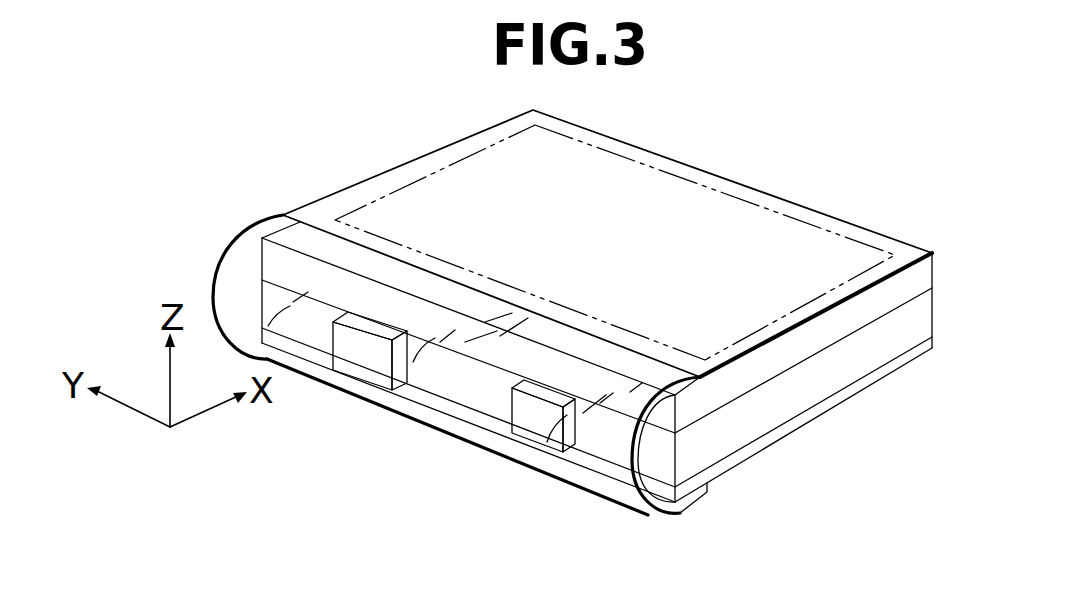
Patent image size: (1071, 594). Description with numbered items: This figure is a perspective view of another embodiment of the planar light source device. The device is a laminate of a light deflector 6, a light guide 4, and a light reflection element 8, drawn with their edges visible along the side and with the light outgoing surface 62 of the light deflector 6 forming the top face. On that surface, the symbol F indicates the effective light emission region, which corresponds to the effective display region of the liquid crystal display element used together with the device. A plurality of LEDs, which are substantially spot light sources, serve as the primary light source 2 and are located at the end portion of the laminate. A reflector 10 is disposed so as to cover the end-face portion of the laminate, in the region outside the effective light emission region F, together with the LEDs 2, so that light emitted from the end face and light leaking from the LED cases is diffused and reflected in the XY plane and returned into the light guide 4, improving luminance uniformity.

The primary light source 2 is at (367, 368).
The light guide 4 is at (918, 320).
The light deflector 6 is at (923, 275).
The light reflection element 8 is at (913, 355).
The reflector 10 is at (612, 448).
The light outgoing surface 62 is at (742, 193).
The effective light emission region F is at (800, 218).